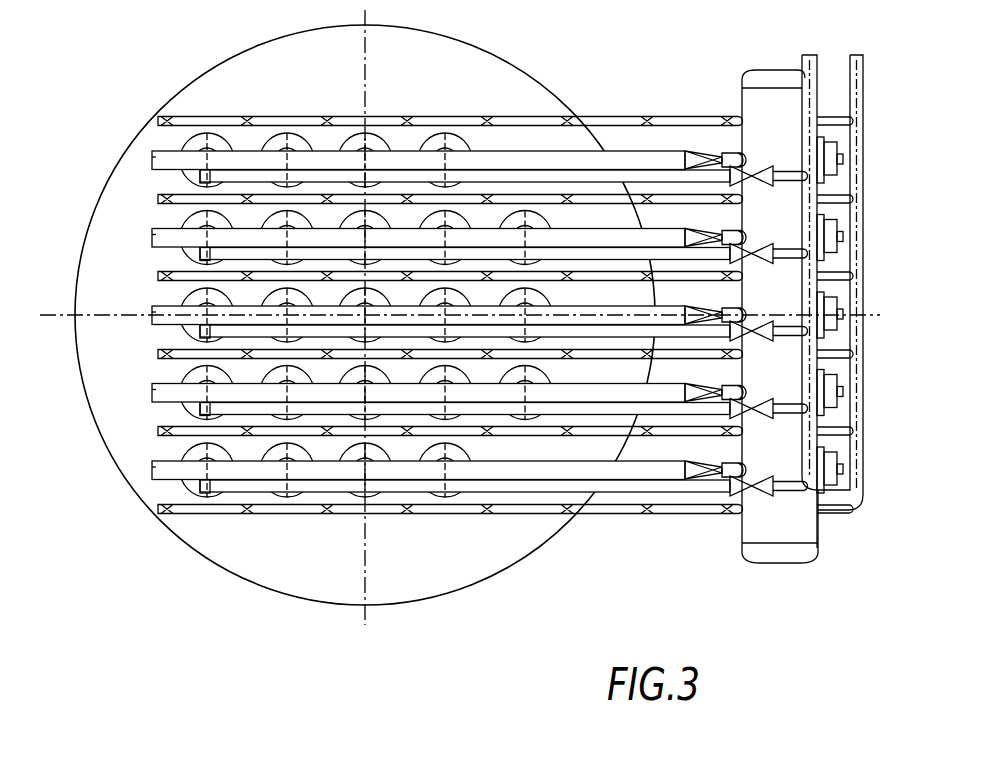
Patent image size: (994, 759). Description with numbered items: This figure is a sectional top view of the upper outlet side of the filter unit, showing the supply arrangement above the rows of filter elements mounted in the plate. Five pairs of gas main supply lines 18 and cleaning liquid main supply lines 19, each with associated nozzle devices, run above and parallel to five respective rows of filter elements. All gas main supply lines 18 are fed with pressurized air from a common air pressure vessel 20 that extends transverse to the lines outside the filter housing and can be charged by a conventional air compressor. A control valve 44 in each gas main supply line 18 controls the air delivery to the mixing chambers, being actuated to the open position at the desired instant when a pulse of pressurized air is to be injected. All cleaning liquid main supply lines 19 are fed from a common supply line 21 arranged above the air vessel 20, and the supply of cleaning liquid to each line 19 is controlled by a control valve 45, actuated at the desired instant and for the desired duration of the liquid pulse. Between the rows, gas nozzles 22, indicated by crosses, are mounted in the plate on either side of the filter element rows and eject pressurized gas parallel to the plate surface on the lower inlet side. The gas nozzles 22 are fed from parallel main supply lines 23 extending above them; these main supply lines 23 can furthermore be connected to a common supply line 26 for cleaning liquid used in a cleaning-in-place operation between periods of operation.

The gas main supply line 18 is at (162, 158).
The cleaning liquid main supply line 19 is at (243, 172).
The air pressure vessel 20 is at (762, 113).
The common supply line 21 is at (808, 72).
The gas nozzle 22 is at (403, 116).
The main supply line 23 is at (530, 120).
The common supply line for cleaning liquid 26 is at (858, 70).
The control valve 44 is at (690, 158).
The control valve 45 is at (757, 170).